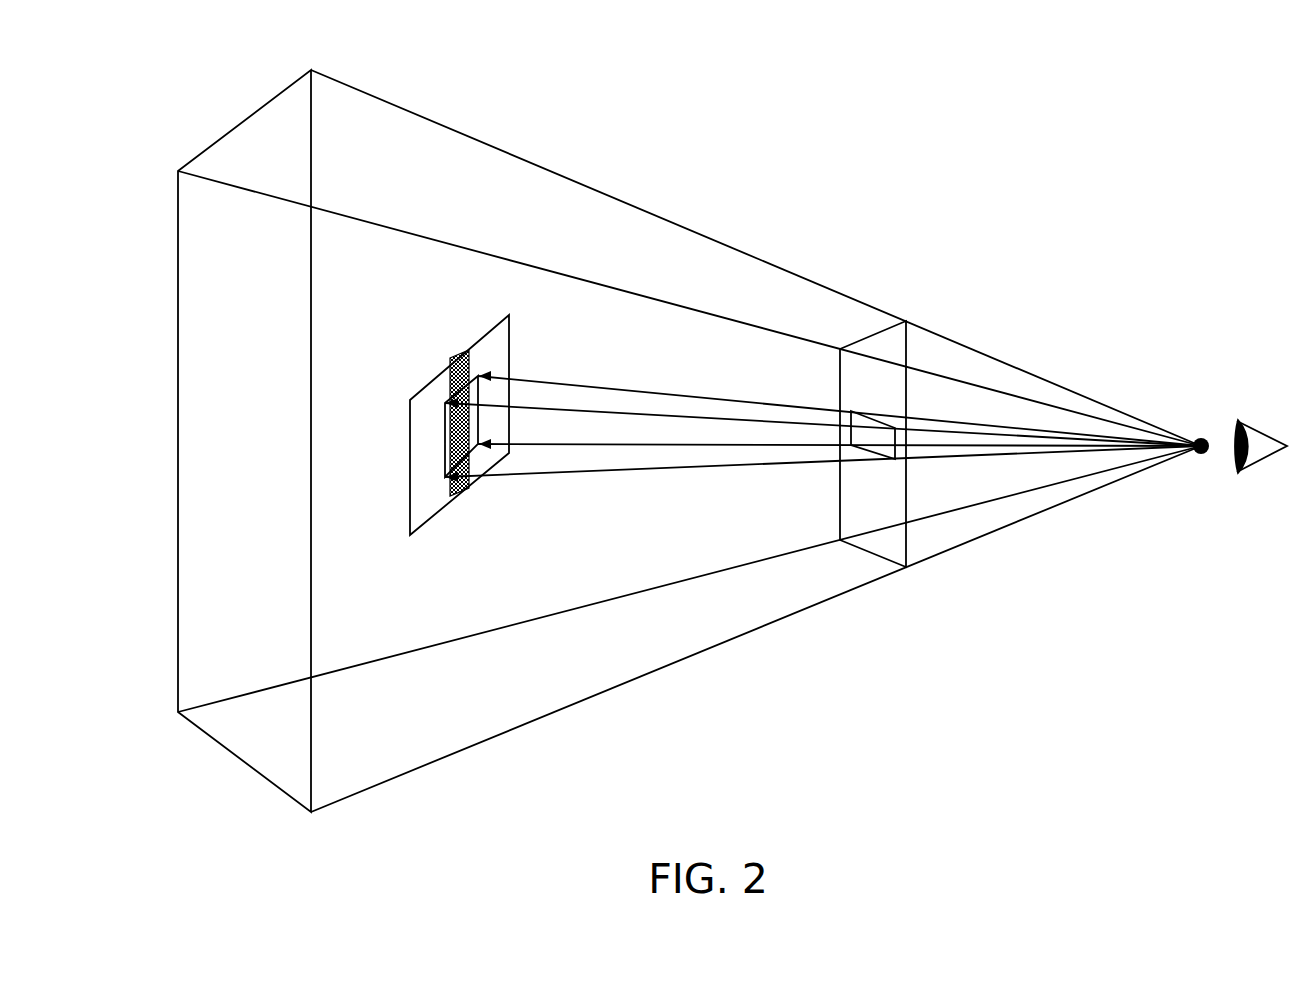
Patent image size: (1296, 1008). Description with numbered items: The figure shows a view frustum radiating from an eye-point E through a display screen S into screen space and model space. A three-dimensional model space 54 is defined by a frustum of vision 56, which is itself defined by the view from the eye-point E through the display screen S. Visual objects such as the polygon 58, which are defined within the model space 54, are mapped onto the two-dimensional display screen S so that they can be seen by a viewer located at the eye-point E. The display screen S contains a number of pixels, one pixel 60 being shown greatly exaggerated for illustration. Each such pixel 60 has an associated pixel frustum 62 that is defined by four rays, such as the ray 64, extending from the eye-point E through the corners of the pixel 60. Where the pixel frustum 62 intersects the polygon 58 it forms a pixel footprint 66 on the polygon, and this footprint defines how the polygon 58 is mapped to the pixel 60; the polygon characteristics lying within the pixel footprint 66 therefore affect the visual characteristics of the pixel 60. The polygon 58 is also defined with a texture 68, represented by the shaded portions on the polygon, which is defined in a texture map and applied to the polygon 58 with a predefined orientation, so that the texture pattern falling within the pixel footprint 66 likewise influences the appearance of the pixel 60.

The three-dimensional model space 54 is at (716, 347).
The frustum of vision 56 is at (1070, 388).
The polygon 58 is at (408, 483).
The pixel 60 is at (872, 455).
The pixel frustum 62 is at (782, 453).
The ray 64 is at (741, 465).
The pixel footprint 66 is at (444, 447).
The texture 68 is at (462, 372).
The display screen S is at (863, 370).
The eye-point E is at (1201, 438).